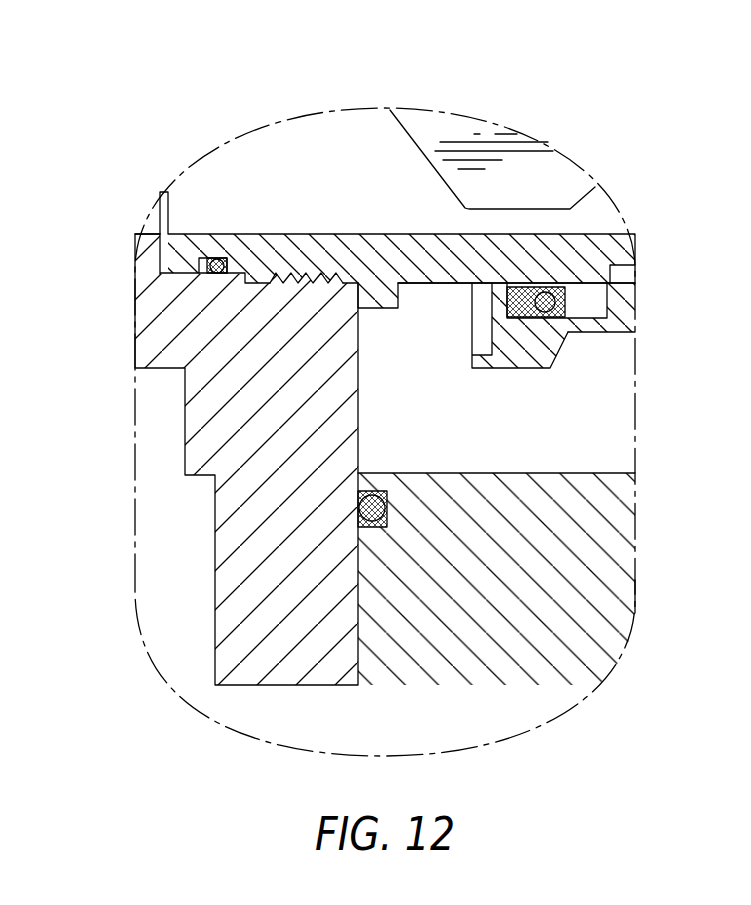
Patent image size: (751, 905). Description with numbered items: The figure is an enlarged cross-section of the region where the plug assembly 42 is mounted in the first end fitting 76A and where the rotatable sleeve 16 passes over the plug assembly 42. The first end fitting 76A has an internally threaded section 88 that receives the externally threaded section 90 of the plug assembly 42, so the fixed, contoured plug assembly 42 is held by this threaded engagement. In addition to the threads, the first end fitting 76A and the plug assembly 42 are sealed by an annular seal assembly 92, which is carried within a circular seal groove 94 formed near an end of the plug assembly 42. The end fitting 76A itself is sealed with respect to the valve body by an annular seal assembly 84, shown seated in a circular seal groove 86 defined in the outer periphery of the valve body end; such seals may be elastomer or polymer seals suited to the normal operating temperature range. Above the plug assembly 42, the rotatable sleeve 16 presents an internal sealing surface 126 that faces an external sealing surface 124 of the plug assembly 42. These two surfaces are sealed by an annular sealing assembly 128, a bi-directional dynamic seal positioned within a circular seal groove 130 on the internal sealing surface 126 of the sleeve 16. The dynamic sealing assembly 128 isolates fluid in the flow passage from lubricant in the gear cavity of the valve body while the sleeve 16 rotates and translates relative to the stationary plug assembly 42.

The rotatable sleeve 16 is at (550, 250).
The plug assembly 42 is at (203, 240).
The first end fitting 76A is at (225, 620).
The seal assembly 84 is at (358, 506).
The seal groove 86 is at (387, 522).
The internally threaded section 88 is at (290, 281).
The externally threaded section 90 is at (283, 283).
The seal assembly 92 is at (213, 276).
The seal groove 94 is at (201, 276).
The external sealing surface 124 is at (603, 300).
The internal sealing surface 126 is at (625, 266).
The annular sealing assembly 128 is at (572, 300).
The seal groove 130 is at (587, 310).